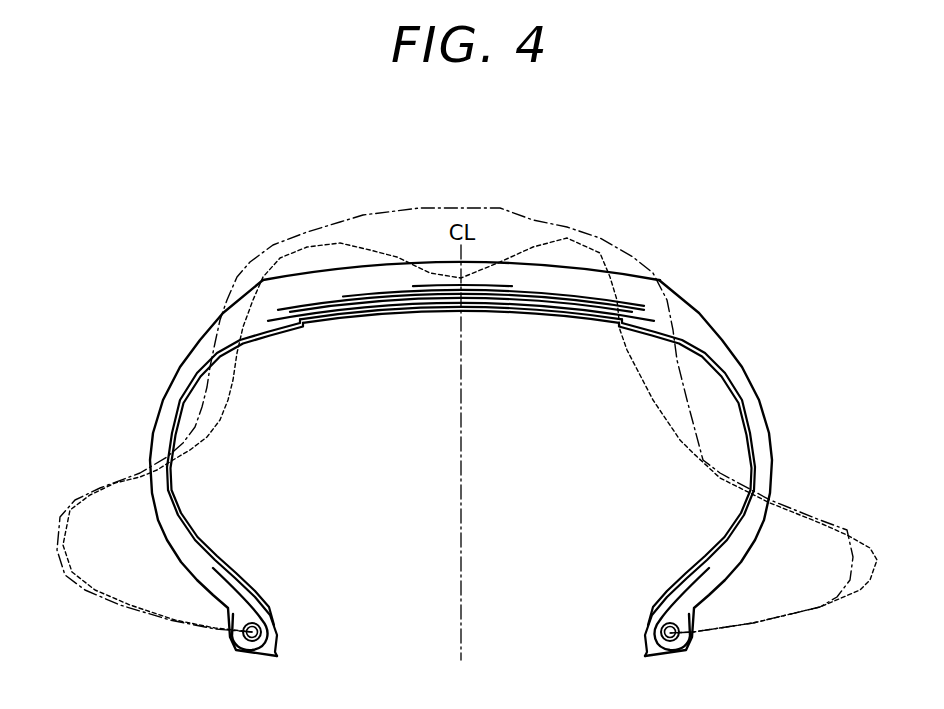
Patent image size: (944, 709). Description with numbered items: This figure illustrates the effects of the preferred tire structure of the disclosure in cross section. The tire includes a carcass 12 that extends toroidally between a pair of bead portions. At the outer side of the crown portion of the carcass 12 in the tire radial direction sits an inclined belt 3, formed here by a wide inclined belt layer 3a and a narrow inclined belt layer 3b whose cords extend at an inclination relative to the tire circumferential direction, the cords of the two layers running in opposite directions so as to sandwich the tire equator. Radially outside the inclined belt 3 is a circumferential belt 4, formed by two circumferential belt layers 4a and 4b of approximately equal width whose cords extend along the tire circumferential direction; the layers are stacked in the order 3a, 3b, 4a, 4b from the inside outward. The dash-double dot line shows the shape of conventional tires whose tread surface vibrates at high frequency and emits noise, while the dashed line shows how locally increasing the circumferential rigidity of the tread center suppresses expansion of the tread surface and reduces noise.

The inclined belt 3 is at (461, 361).
The wide inclined belt layer 3a is at (357, 309).
The narrow inclined belt layer 3b is at (338, 370).
The circumferential belt 4 is at (461, 214).
The circumferential belt layer 4a is at (343, 299).
The circumferential belt layer 4b is at (568, 294).
The carcass 12 is at (194, 527).